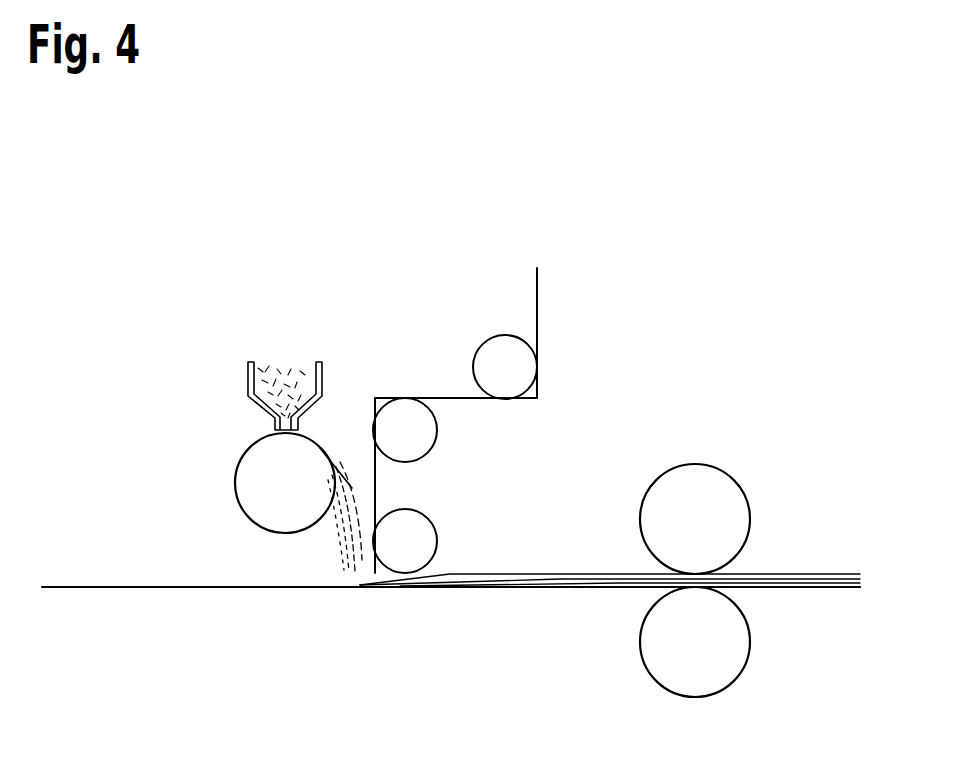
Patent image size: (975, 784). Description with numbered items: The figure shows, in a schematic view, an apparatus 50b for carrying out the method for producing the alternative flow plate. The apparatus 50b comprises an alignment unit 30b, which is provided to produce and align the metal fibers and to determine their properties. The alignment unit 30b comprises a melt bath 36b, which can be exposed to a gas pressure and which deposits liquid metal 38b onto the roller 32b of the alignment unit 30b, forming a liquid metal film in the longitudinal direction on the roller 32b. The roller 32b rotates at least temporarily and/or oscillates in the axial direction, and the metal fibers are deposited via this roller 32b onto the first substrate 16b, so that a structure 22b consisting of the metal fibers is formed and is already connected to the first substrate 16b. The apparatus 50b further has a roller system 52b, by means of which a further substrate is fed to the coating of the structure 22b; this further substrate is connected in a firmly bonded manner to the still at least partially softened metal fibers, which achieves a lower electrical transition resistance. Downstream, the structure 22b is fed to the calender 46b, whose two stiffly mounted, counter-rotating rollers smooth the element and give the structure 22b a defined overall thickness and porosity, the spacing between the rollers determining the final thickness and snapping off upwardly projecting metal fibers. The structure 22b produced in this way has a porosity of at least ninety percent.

The first substrate 16b is at (260, 590).
The structure 22b is at (515, 588).
The alignment unit 30b is at (215, 405).
The roller 32b is at (262, 486).
The melt bath 36b is at (337, 350).
The liquid metal 38b is at (287, 362).
The calender 46b is at (782, 495).
The apparatus 50b is at (622, 247).
The roller system 52b is at (560, 372).